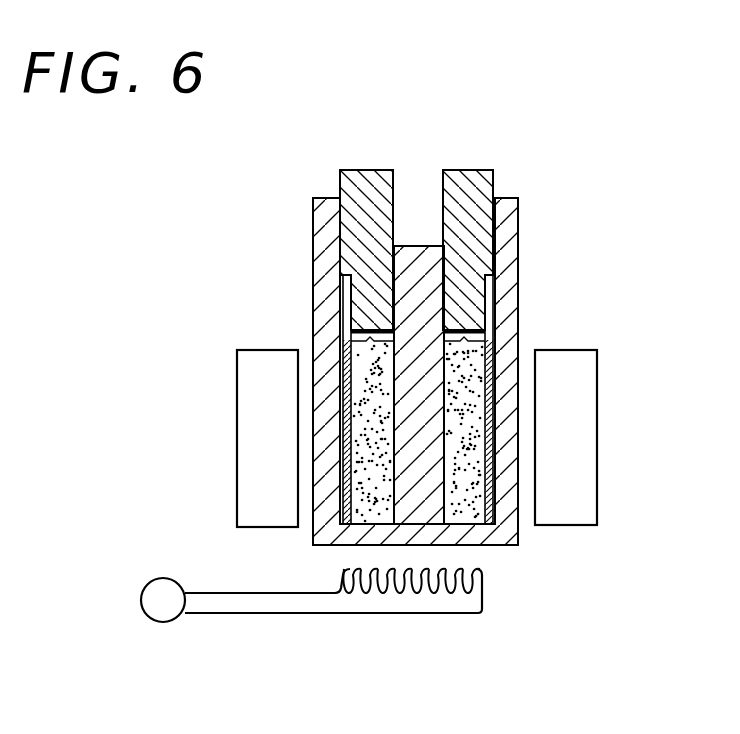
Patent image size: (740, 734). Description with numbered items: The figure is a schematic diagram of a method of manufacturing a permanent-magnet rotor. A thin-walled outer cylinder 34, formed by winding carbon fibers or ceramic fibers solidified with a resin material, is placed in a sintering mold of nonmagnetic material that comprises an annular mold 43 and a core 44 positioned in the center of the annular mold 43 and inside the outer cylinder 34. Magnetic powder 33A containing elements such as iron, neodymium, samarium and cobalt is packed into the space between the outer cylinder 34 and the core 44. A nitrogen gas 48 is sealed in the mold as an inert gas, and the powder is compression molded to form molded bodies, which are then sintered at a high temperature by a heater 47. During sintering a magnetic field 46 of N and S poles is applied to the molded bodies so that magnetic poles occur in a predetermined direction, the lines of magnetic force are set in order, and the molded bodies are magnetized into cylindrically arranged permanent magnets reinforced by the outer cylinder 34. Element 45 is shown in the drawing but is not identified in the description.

The magnetic powder 33A is at (368, 377).
The outer cylinder 34 is at (347, 457).
The mold 43 is at (325, 238).
The core 44 is at (427, 453).
The plug 45 is at (362, 195).
The magnetic field 46 is at (266, 392).
The heater 47 is at (406, 605).
The nitrogen gas 48 is at (380, 333).